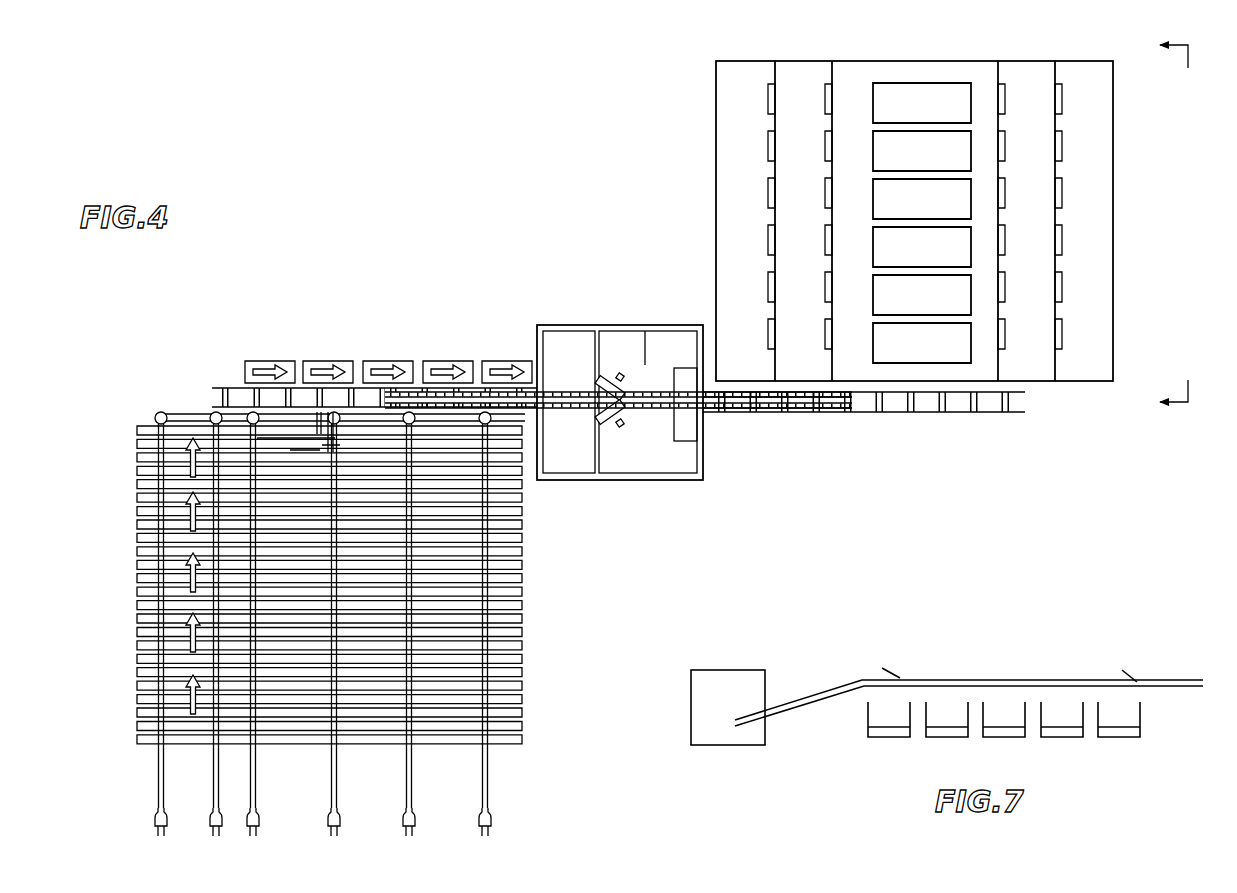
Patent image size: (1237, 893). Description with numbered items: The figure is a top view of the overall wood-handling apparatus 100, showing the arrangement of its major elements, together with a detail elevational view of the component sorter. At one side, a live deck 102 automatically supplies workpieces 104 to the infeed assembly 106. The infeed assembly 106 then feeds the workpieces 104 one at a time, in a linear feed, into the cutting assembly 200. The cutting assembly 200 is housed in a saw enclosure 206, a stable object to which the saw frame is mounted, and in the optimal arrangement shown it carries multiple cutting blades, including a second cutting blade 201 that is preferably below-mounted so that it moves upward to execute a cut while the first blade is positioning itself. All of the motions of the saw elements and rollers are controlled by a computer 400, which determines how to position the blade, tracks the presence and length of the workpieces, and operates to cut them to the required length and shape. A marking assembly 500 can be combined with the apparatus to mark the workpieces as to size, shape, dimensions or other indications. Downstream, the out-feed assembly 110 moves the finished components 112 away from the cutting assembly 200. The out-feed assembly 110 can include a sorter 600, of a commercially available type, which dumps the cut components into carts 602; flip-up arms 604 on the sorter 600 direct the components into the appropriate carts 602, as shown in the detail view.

In FIG. 4, the wood-handling apparatus 100 is at (672, 494).
In FIG. 4, the live deck 102 is at (507, 760).
In FIG. 4, the workpieces 104 is at (415, 388).
In FIG. 7, the workpieces 104 is at (950, 678).
In FIG. 4, the infeed assembly 106 is at (214, 383).
In FIG. 4, the out-feed assembly 110 is at (983, 425).
In FIG. 4, the finished components 112 is at (826, 414).
In FIG. 4, the cutting assembly 200 is at (626, 388).
In FIG. 7, the cutting assembly 200 is at (750, 688).
In FIG. 4, the second cutting blade 201 is at (622, 420).
In FIG. 4, the saw enclosure 206 is at (546, 320).
In FIG. 4, the computer 400 is at (641, 366).
In FIG. 4, the marking assembly 500 is at (686, 428).
In FIG. 4, the sorter 600 is at (1071, 390).
In FIG. 4, the carts 602 is at (957, 245).
In FIG. 7, the carts 602 is at (1070, 730).
In FIG. 4, the flip-up arms 604 is at (1008, 145).
In FIG. 7, the flip-up arms 604 is at (1137, 670).